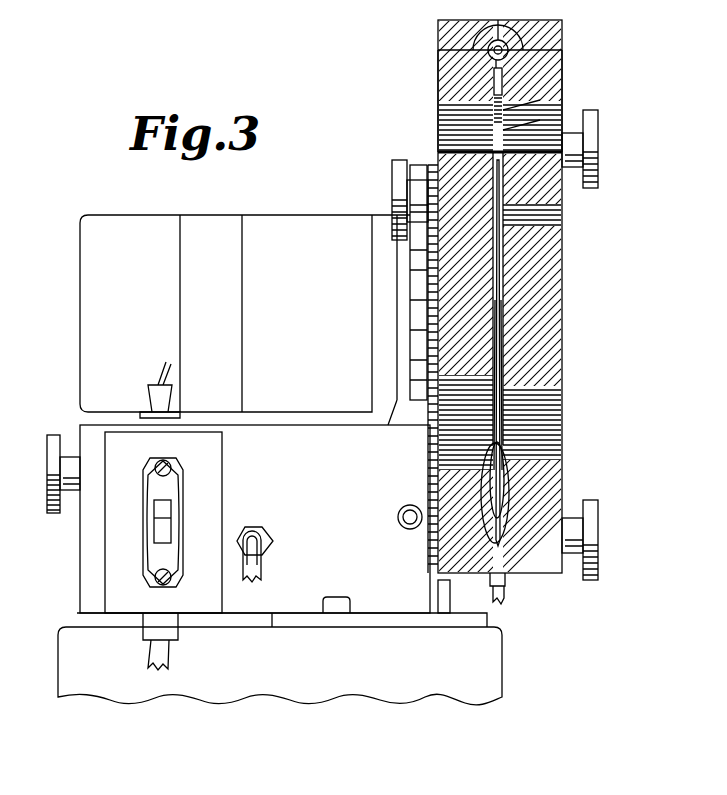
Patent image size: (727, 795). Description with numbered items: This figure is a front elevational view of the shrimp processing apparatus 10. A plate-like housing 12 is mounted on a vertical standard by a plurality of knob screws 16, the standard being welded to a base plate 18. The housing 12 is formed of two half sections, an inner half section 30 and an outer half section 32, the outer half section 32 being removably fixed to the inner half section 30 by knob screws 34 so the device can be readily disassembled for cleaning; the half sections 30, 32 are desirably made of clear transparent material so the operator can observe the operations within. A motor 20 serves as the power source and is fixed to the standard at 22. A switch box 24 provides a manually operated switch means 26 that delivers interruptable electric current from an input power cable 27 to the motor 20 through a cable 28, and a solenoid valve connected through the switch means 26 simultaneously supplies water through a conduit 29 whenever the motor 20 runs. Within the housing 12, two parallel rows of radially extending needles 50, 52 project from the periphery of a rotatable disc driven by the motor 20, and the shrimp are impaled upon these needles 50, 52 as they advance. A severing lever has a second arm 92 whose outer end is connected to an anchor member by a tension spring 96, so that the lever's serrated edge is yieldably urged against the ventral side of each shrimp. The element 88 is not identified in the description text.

The shrimp processing apparatus 10 is at (366, 195).
The housing 12 is at (573, 306).
The knob screws 16 is at (393, 160).
The base plate 18 is at (384, 600).
The motor 20 is at (245, 320).
The motor fixing location 22 is at (422, 317).
The switch box 24 is at (116, 547).
The switch means 26 is at (165, 507).
The input power cable 27 is at (146, 657).
The cable 28 is at (166, 386).
The conduit 29 is at (256, 571).
The inner half section 30 is at (440, 67).
The outer half section 32 is at (560, 60).
The knob screws 34 is at (600, 149).
The needles 50 is at (446, 473).
The needles 52 is at (545, 477).
The pivot 88 is at (513, 35).
The second arm 92 is at (492, 85).
The tension spring 96 is at (520, 110).